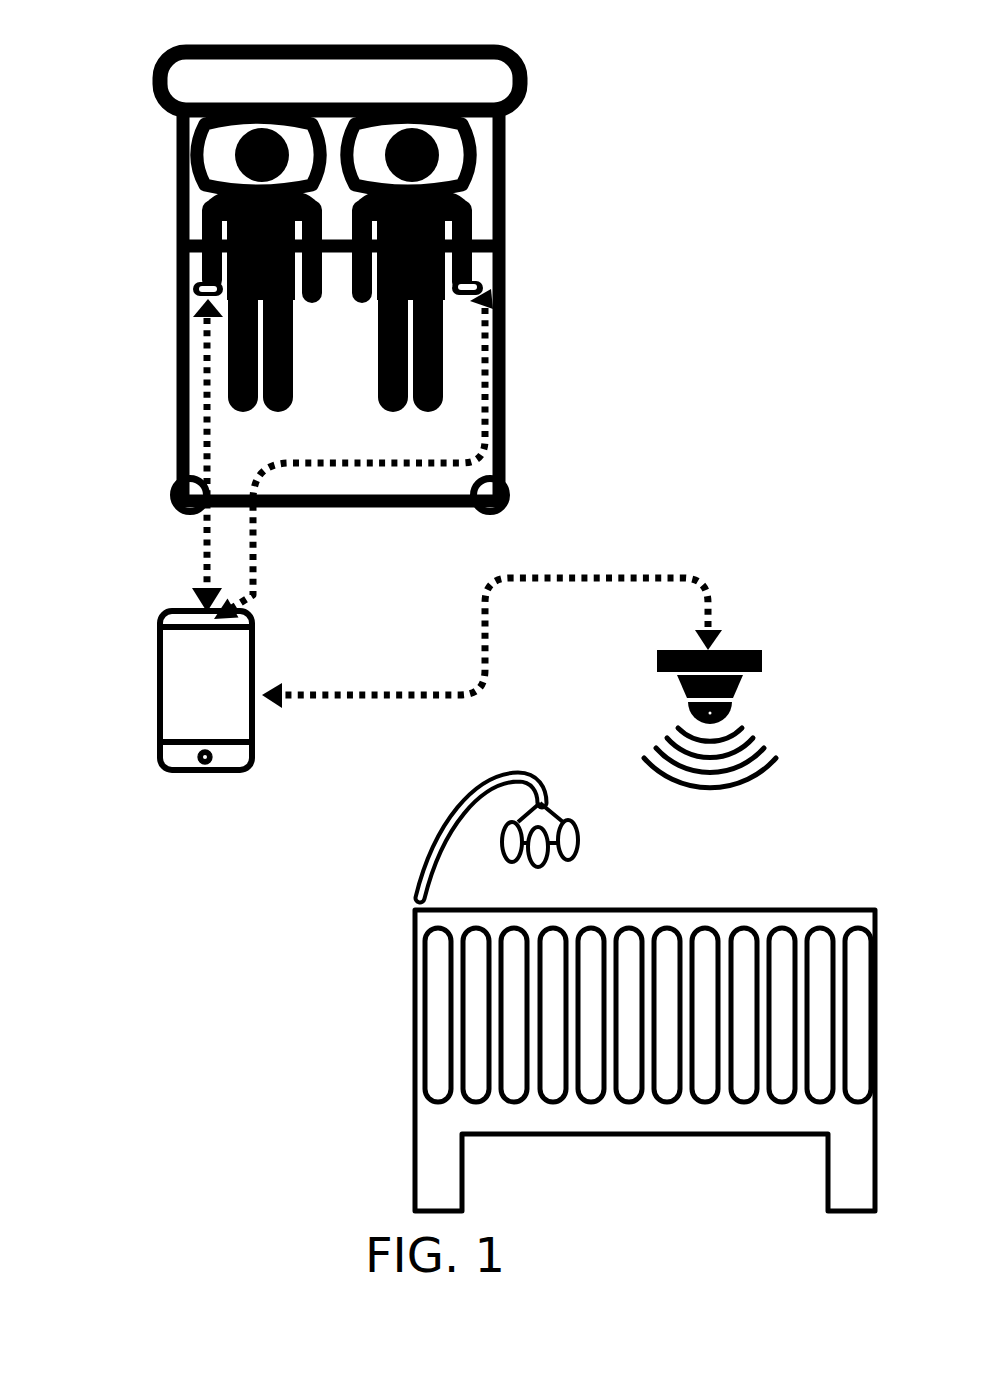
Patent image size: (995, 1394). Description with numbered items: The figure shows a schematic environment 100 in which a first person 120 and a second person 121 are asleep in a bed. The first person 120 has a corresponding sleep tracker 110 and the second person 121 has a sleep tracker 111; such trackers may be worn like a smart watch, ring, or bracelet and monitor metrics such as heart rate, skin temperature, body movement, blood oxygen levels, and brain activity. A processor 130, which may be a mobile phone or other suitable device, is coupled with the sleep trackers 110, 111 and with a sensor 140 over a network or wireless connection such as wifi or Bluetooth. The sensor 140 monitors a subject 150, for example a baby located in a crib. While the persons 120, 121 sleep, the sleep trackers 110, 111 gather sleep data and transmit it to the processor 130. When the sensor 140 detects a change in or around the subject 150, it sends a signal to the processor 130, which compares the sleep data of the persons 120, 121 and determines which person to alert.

The schematic environment 100 is at (741, 178).
The sleep tracker 110 is at (478, 290).
The sleep tracker 111 is at (193, 291).
The first person 120 is at (460, 212).
The second person 121 is at (227, 204).
The processor 130 is at (158, 632).
The sensor 140 is at (752, 657).
The subject 150 is at (750, 908).